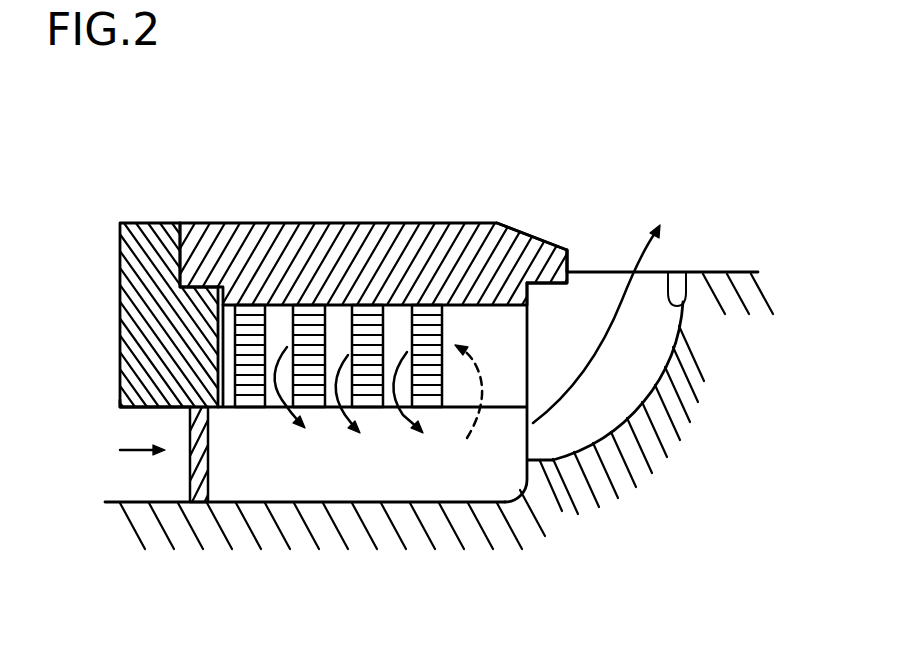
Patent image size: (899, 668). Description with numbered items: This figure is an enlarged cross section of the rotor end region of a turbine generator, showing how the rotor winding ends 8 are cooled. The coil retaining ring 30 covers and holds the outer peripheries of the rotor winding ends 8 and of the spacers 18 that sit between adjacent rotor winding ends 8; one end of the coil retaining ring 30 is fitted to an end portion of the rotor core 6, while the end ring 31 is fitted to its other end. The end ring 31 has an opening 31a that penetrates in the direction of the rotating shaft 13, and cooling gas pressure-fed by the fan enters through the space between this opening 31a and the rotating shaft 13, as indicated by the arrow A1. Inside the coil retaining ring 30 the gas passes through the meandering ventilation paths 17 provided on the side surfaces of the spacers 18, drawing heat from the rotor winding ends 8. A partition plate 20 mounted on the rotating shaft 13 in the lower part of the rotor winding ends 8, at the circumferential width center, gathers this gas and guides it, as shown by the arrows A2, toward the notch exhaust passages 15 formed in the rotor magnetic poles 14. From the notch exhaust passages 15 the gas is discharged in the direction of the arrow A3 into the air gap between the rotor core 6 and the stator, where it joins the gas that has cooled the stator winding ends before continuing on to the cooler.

The rotor core 6 is at (743, 187).
The rotor winding ends 8 is at (256, 303).
The rotating shaft 13 is at (112, 502).
The rotor magnetic poles 14 is at (746, 272).
The notch exhaust passages 15 is at (686, 272).
The meandering ventilation paths 17 is at (503, 223).
The spacers 18 is at (293, 303).
The partition plate 20 is at (188, 476).
The coil retaining ring 30 is at (204, 223).
The end ring 31 is at (120, 272).
The opening 31a is at (120, 407).
The arrow A1 is at (127, 452).
The arrows A2 is at (404, 432).
The arrow A3 is at (600, 296).